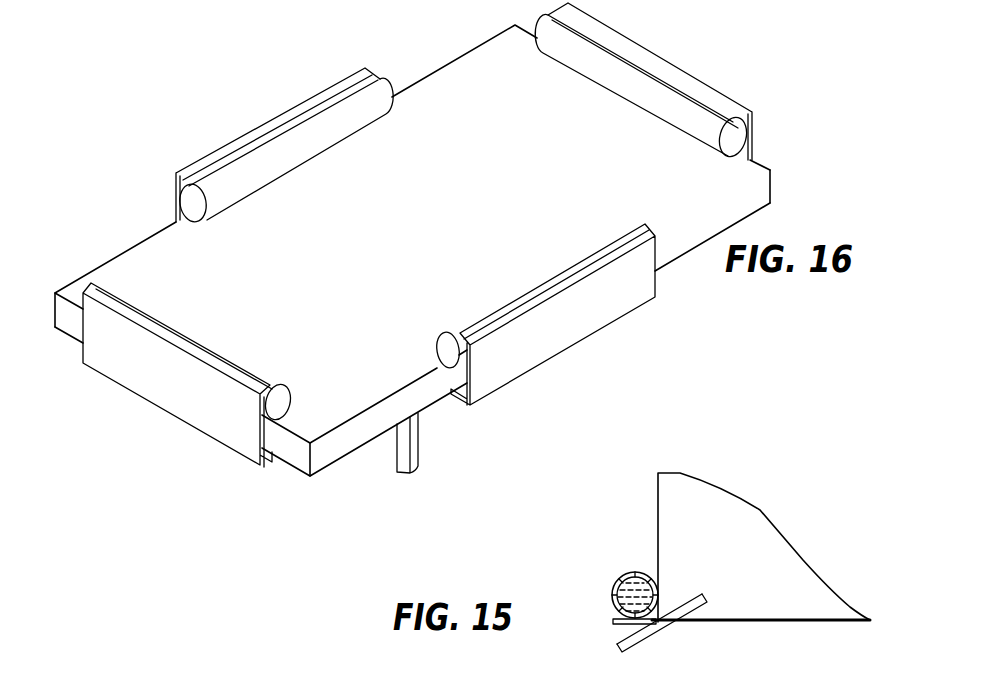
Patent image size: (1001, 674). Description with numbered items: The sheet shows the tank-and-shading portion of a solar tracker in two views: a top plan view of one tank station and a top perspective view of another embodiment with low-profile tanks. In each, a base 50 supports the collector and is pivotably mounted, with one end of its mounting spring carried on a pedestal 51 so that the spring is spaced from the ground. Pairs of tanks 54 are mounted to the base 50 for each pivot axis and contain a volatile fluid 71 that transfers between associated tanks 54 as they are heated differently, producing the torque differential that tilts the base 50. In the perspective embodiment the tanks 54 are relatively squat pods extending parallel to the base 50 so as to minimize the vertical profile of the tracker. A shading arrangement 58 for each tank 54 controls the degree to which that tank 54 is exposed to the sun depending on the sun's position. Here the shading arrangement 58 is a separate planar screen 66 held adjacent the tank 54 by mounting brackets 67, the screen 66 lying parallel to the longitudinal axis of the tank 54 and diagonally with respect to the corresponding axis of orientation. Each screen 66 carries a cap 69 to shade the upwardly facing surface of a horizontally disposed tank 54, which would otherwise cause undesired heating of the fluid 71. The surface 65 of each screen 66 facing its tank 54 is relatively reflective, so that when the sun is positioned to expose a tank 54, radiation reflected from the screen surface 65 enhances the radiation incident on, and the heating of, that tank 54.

In FIG. 16, the base 50 is at (488, 108).
In FIG. 15, the base 50 is at (753, 579).
In FIG. 16, the pedestal 51 is at (419, 451).
In FIG. 16, the tank 54 is at (383, 122).
In FIG. 15, the tank 54 is at (634, 573).
In FIG. 16, the shading arrangement 58 is at (722, 78).
In FIG. 15, the shading arrangement 58 is at (600, 634).
In FIG. 15, the screen surface 65 is at (696, 597).
In FIG. 16, the screen 66 is at (175, 206).
In FIG. 15, the screen 66 is at (660, 626).
In FIG. 15, the mounting bracket 67 is at (612, 621).
In FIG. 16, the cap 69 is at (365, 70).
In FIG. 15, the volatile fluid 71 is at (617, 586).